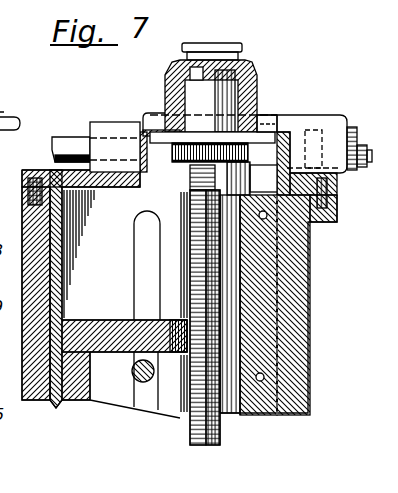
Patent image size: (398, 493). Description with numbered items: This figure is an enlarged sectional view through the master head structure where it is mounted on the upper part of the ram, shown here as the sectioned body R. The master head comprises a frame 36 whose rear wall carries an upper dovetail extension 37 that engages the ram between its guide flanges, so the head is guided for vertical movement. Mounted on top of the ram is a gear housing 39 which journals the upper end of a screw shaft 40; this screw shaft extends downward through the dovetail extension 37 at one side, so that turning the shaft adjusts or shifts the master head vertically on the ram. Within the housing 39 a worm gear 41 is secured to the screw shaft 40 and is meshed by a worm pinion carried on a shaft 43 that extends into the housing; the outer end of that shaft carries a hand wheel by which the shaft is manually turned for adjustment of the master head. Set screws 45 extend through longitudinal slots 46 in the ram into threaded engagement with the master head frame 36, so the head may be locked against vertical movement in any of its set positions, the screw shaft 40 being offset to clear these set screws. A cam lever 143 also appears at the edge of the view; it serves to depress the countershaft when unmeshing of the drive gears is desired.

The rotor body casting R is at (298, 296).
The cam lever 143 is at (0, 116).
The shaft 43 is at (66, 146).
The gear housing 39 is at (255, 92).
The worm gear 41 is at (253, 152).
The longitudinal slots 46 is at (147, 248).
The upper dovetail extension 37 is at (66, 298).
The frame 36 is at (120, 326).
The set screws 45 is at (133, 378).
The screw shaft 40 is at (218, 434).